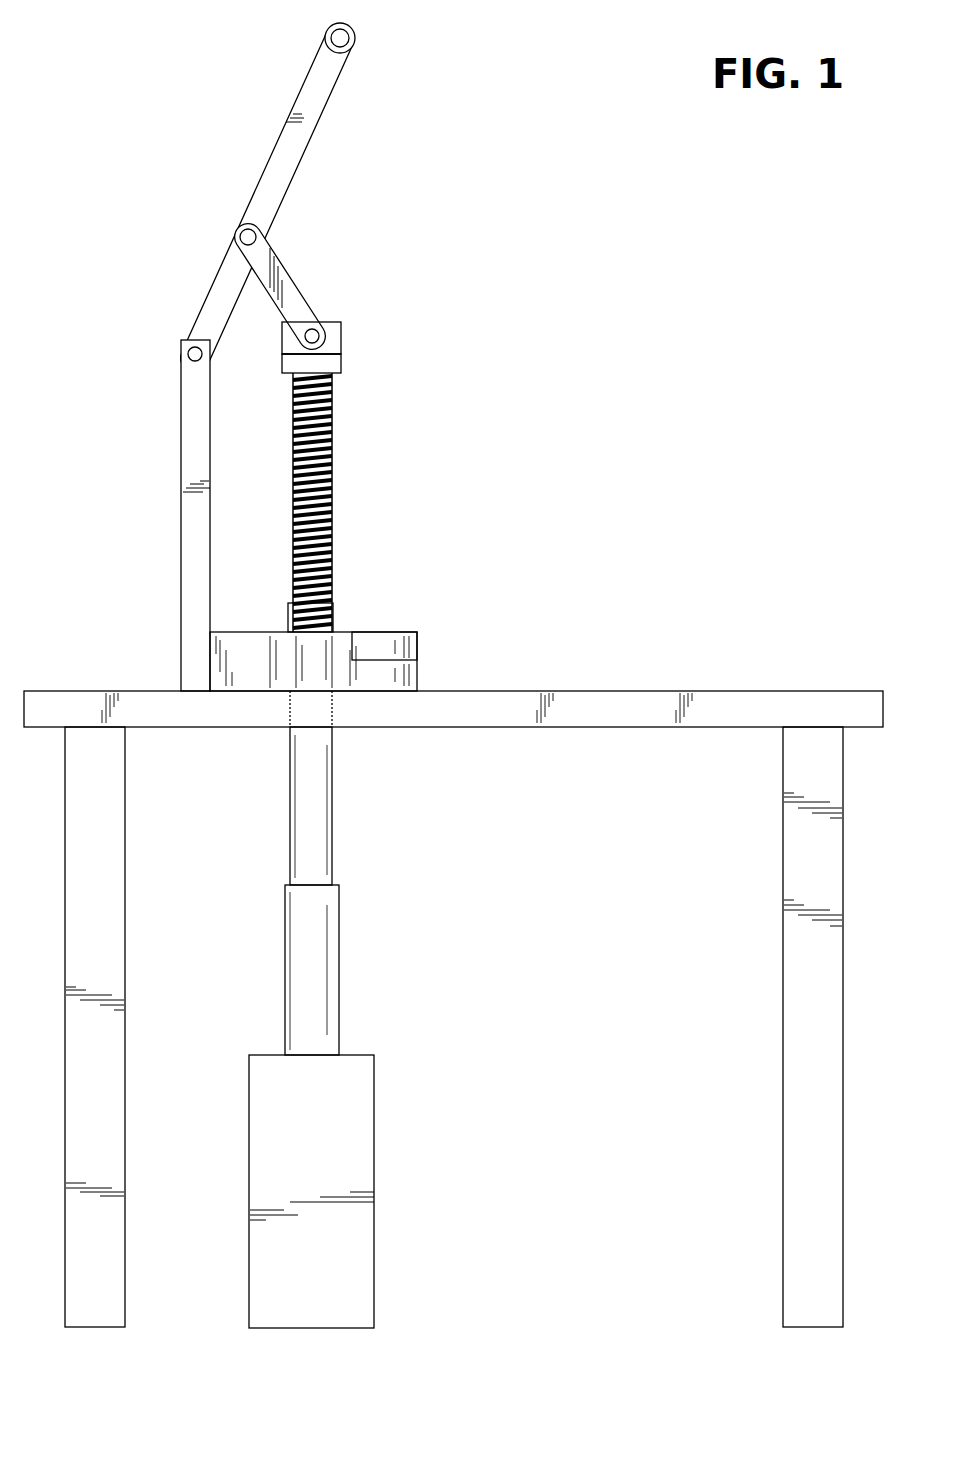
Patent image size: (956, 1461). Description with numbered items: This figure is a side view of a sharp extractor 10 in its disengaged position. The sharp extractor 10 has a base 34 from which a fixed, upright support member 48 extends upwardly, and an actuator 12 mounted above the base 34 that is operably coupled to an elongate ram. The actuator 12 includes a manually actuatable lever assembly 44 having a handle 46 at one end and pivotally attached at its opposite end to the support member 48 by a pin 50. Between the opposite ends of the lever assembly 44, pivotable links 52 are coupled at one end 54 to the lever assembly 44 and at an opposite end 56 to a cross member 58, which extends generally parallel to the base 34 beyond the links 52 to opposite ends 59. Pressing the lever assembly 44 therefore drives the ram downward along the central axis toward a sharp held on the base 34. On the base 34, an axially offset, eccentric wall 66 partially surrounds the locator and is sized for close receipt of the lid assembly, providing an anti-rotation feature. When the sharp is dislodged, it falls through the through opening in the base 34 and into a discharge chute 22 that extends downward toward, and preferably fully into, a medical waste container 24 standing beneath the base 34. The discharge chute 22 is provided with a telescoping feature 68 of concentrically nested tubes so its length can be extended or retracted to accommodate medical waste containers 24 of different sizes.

The sharp extractor 10 is at (545, 310).
The actuator 12 is at (305, 243).
The discharge chute 22 is at (333, 845).
The medical waste container 24 is at (374, 1150).
The base 34 is at (418, 677).
The lever assembly 44 is at (335, 90).
The handle 46 is at (357, 38).
The support member 48 is at (181, 522).
The pin 50 is at (192, 362).
The links 52 is at (298, 285).
The one end of the links 54 is at (244, 221).
The opposite end of the links 56 is at (342, 347).
The cross member 58 is at (341, 357).
The opposite ends of the cross member 59 is at (330, 363).
The wall 66 is at (385, 642).
The telescoping feature 68 is at (339, 885).